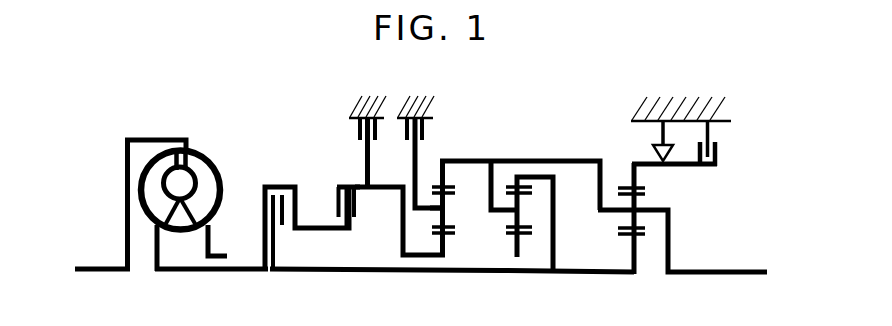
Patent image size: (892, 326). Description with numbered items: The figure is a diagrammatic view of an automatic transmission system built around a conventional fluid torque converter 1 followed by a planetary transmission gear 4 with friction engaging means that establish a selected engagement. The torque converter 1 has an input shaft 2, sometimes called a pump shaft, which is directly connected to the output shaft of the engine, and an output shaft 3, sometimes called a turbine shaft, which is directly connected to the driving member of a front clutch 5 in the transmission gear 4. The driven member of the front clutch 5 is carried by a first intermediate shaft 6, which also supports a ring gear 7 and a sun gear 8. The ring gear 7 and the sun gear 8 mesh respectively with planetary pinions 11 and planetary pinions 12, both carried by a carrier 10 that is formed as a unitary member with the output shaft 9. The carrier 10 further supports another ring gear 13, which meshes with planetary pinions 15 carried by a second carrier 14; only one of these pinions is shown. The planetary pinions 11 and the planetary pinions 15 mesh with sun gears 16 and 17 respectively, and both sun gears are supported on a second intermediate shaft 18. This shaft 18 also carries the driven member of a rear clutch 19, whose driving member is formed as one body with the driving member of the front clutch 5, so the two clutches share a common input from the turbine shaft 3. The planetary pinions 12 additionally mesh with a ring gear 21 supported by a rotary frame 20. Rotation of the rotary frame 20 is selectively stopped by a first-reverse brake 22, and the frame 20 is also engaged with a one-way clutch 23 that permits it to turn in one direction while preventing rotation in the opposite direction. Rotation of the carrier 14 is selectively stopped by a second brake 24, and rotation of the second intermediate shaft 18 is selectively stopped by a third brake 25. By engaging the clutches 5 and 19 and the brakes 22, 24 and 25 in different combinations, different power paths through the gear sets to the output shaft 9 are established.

The fluid torque converter 1 is at (150, 127).
The input shaft 2 is at (90, 267).
The output shaft 3 is at (252, 267).
The transmission gear 4 is at (561, 150).
The front clutch 5 is at (280, 185).
The first intermediate shaft 6 is at (373, 274).
The ring gear 7 is at (512, 183).
The sun gear 8 is at (627, 238).
The output shaft 9 is at (710, 271).
The carrier 10 is at (498, 159).
The planetary pinions 11 is at (523, 199).
The planetary pinions 12 is at (638, 203).
The ring gear 13 is at (448, 187).
The carrier 14 is at (418, 155).
The planetary pinions 15 is at (448, 207).
The sun gear 16 is at (530, 236).
The sun gear 17 is at (450, 234).
The second intermediate shaft 18 is at (399, 185).
The rear clutch 19 is at (347, 185).
The rotary frame 20 is at (686, 167).
The ring gear 21 is at (627, 183).
The first-reverse brake 22 is at (724, 115).
The one-way clutch 23 is at (658, 121).
The second brake 24 is at (428, 122).
The third brake 25 is at (384, 117).